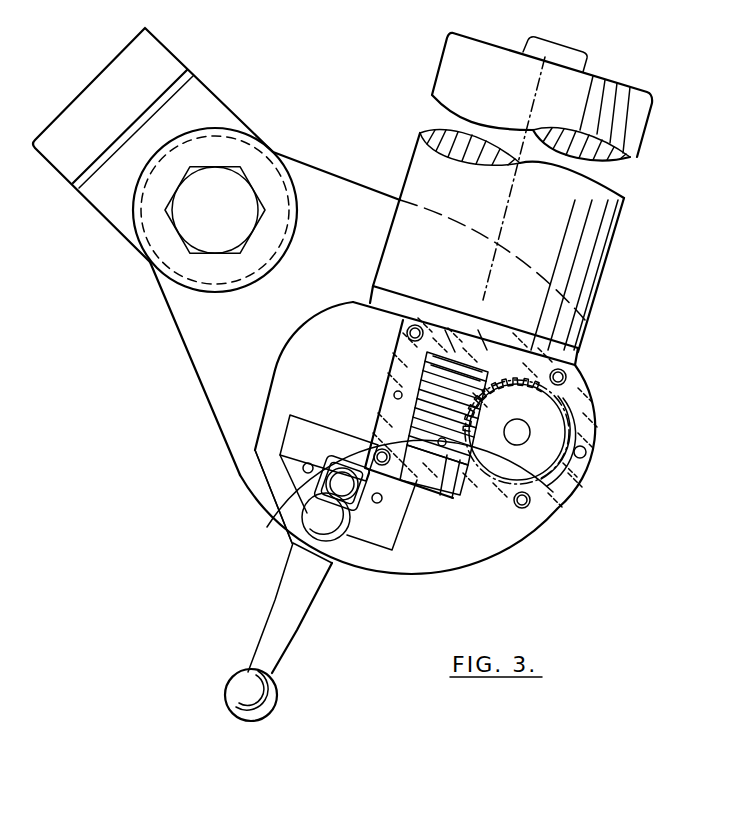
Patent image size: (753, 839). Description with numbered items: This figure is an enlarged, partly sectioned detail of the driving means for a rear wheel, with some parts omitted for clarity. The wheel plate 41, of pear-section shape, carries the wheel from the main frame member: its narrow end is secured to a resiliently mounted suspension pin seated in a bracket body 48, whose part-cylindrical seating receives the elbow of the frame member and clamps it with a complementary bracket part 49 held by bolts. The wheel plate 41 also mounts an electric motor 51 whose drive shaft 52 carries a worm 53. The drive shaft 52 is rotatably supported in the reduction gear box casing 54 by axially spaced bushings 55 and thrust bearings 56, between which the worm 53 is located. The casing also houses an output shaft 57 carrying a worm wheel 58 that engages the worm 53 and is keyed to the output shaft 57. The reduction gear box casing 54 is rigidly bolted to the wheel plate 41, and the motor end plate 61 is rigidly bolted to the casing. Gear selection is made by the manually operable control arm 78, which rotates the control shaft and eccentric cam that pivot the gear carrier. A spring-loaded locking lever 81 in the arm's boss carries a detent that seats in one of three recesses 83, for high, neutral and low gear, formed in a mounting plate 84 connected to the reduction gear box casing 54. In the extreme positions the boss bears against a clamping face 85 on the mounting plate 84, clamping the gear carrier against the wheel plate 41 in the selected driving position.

The wheel plate 41 is at (318, 187).
The bracket body 48 is at (205, 107).
The complementary bracket part 49 is at (167, 66).
The electric motor 51 is at (595, 302).
The drive shaft 52 is at (444, 312).
The worm 53 is at (393, 387).
The reduction gear box casing 54 is at (535, 494).
The bushings 55 is at (485, 355).
The thrust bearings 56 is at (466, 360).
The output shaft 57 is at (519, 431).
The worm wheel 58 is at (545, 386).
The motor end plate 61 is at (565, 350).
The control arm 78 is at (272, 653).
The locking lever 81 is at (320, 530).
The recesses 83 is at (377, 503).
The mounting plate 84 is at (397, 508).
The clamping face 85 is at (300, 475).